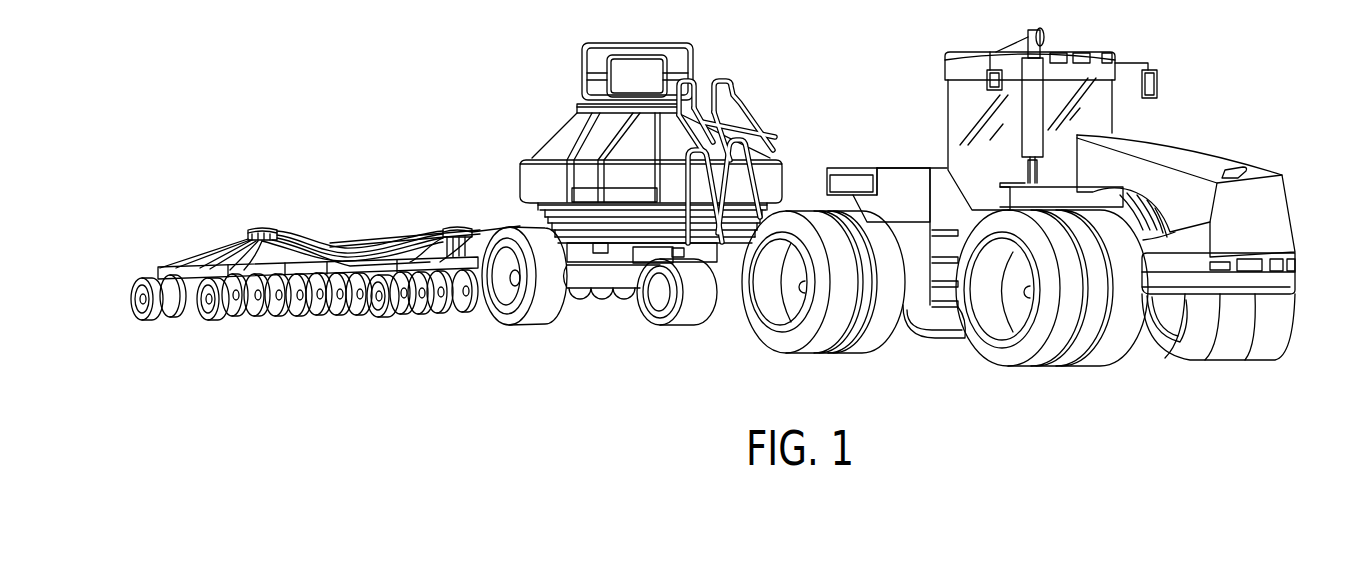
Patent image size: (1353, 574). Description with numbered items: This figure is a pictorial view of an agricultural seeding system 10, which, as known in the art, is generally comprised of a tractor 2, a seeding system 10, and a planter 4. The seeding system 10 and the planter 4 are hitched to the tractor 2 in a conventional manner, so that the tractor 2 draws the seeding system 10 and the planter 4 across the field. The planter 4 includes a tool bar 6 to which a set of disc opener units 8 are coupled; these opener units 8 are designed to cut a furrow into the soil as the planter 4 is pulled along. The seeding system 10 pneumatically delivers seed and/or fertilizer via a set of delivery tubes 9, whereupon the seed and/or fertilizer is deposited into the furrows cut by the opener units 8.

The tractor 2 is at (1242, 149).
The planter 4 is at (240, 215).
The tool bar 6 is at (381, 268).
The opener units 8 is at (448, 318).
The delivery tubes 9 is at (313, 221).
The seeding system 10 is at (702, 37).